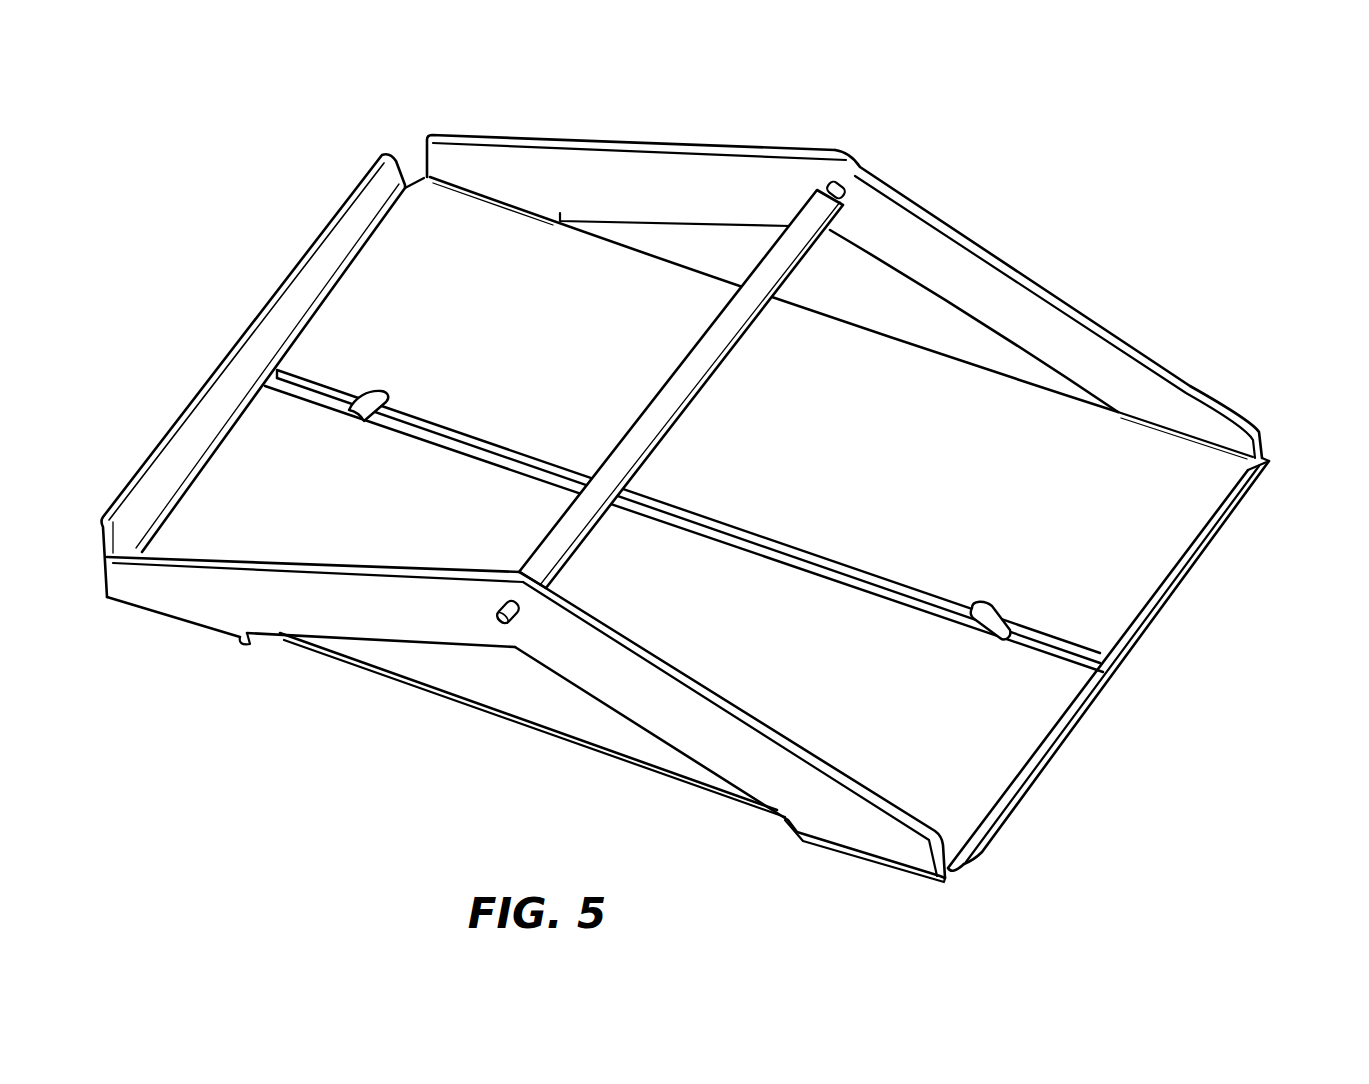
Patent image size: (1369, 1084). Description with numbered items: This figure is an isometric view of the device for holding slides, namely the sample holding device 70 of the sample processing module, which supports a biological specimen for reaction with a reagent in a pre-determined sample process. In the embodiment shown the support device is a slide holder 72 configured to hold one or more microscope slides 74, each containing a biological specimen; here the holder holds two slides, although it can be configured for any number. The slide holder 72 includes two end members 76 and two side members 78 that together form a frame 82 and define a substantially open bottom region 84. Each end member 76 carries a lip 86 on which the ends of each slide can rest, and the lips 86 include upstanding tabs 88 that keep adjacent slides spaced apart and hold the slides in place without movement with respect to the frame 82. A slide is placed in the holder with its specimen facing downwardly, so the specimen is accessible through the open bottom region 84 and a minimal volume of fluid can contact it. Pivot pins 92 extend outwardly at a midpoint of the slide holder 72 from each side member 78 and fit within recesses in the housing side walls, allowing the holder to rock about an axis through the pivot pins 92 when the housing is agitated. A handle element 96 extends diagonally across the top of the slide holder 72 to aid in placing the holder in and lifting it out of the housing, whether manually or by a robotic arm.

The sample holding device 70 is at (980, 273).
The slide holder 72 is at (700, 177).
The microscope slides 74 is at (1123, 520).
The end members 76 is at (213, 403).
The side members 78 is at (1172, 397).
The frame 82 is at (1240, 503).
The open bottom region 84 is at (377, 677).
The lip 86 is at (307, 393).
The upstanding tabs 88 is at (367, 397).
The pivot pins 92 is at (858, 162).
The handle element 96 is at (685, 368).